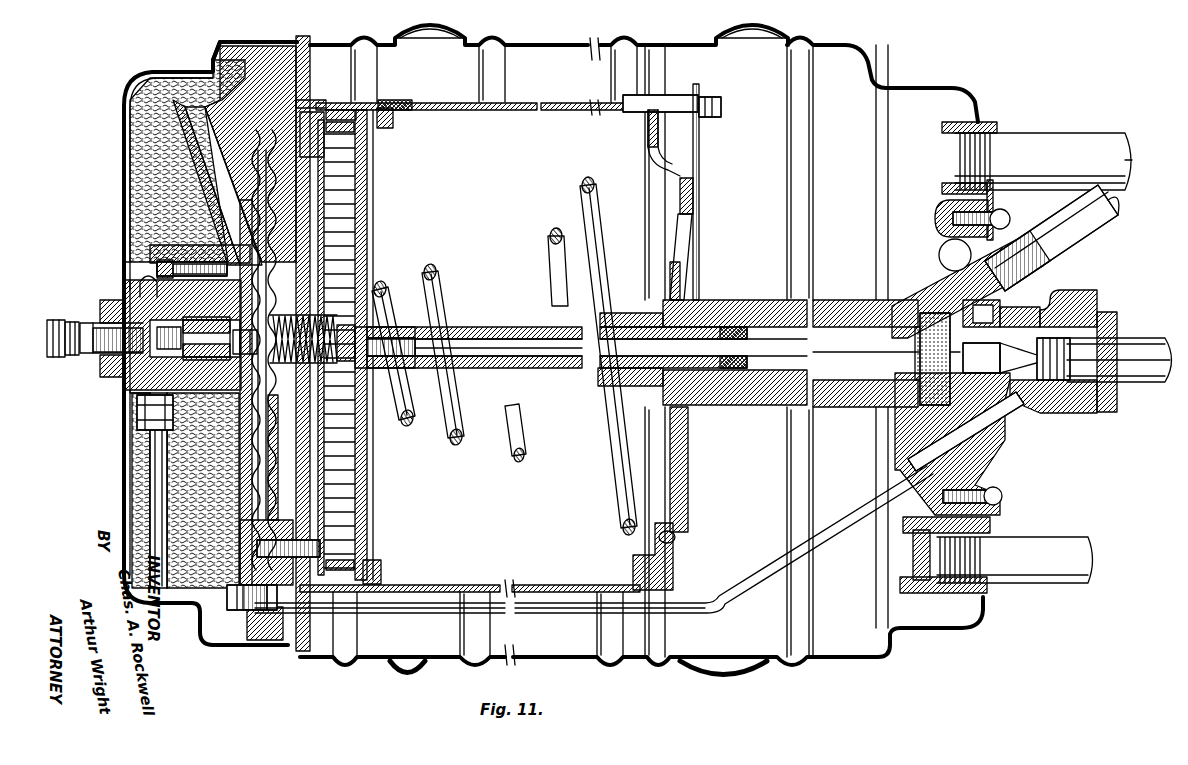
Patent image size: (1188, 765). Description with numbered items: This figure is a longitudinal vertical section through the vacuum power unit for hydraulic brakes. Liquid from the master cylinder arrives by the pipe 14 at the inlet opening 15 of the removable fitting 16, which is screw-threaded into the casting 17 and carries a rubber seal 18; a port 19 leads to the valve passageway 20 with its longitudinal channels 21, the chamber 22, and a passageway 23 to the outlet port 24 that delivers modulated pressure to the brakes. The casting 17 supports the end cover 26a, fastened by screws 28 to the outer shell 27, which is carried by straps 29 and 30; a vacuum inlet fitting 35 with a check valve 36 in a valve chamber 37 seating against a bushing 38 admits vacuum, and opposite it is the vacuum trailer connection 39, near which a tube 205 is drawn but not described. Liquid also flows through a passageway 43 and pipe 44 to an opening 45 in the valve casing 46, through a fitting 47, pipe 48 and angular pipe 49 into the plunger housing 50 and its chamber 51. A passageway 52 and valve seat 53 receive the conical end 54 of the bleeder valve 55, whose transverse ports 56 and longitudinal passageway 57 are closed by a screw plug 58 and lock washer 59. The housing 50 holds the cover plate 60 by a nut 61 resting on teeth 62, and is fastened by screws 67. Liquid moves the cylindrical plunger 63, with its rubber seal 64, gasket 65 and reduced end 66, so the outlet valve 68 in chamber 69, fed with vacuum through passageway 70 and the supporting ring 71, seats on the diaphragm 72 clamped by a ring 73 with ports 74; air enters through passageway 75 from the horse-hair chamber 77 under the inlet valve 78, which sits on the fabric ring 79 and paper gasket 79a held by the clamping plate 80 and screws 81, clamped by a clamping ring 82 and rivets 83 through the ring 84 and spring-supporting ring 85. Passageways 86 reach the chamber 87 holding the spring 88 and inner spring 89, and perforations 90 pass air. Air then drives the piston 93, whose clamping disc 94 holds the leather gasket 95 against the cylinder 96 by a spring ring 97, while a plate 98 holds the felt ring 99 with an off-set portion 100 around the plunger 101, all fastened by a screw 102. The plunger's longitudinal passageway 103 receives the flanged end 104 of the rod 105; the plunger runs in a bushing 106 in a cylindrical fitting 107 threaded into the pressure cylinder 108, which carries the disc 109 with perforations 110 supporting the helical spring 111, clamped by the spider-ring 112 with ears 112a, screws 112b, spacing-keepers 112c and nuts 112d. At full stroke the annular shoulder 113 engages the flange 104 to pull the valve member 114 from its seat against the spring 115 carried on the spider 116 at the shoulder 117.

The pipe 14 is at (1140, 383).
The inlet opening 15 is at (1102, 312).
The removable fitting 16 is at (1108, 413).
The casting 17 is at (940, 300).
The rubber seal 18 is at (1070, 300).
The port 19 is at (1053, 359).
The valve passageway 20 is at (1030, 405).
The longitudinal channels 21 is at (1020, 317).
The chamber 22 is at (965, 380).
The passageway 23 is at (981, 313).
The outlet port 24 is at (1030, 250).
The end cover 26a is at (960, 88).
The outer shell 27 is at (600, 44).
The screws 28 is at (1009, 219).
The strap 29 is at (754, 24).
The strap 30 is at (432, 24).
The vacuum inlet fitting 35 is at (980, 600).
The check valve 36 is at (925, 560).
The valve chamber 37 is at (925, 593).
The bushing 38 is at (912, 548).
The vacuum trailer connection 39 is at (985, 124).
The passageway 43 is at (985, 445).
The pipe 44 is at (846, 520).
The opening 45 is at (268, 640).
The valve casing 46 is at (187, 324).
The fitting 47 is at (252, 642).
The pipe 48 is at (190, 455).
The angular pipe 49 is at (140, 425).
The plunger housing 50 is at (150, 420).
The chamber 51 is at (124, 262).
The passageway 52 is at (130, 288).
The valve seat 53 is at (130, 390).
The conical end 54 is at (136, 385).
The bleeder valve 55 is at (82, 322).
The transverse ports 56 is at (104, 366).
The longitudinal passageway 57 is at (104, 300).
The screw plug 58 is at (54, 358).
The lock washer 59 is at (72, 356).
The cover plate 60 is at (124, 184).
The nut 61 is at (140, 285).
The teeth 62 is at (240, 42).
The cylindrical plunger 63 is at (206, 338).
The rubber seal 64 is at (175, 356).
The gasket 65 is at (206, 327).
The reduced end 66 is at (234, 358).
The screws 67 is at (165, 260).
The outlet valve 68 is at (257, 225).
The chamber 69 is at (240, 470).
The passageway 70 is at (178, 112).
The supporting ring 71 is at (306, 36).
The diaphragm 72 is at (268, 480).
The ring 73 is at (268, 185).
The ports 74 is at (238, 200).
The passageway 75 is at (245, 533).
The chamber 77 is at (178, 517).
The inlet valve 78 is at (340, 205).
The fabric ring 79 is at (340, 176).
The paper gasket 79a is at (345, 162).
The clamping plate 80 is at (340, 148).
The screws 81 is at (356, 130).
The clamping ring 82 is at (280, 470).
The rivets 83 is at (330, 262).
The ring 84 is at (345, 322).
The spring-supporting ring 85 is at (200, 245).
The passageways 86 is at (290, 498).
The chamber 87 is at (340, 456).
The spring 88 is at (394, 350).
The inner spring 89 is at (405, 318).
The perforations 90 is at (345, 246).
The piston 93 is at (368, 180).
The clamping disc 94 is at (370, 108).
The leather gasket 95 is at (334, 100).
The cylinder 96 is at (448, 103).
The spring ring 97 is at (318, 100).
The plate 98 is at (395, 116).
The felt ring 99 is at (396, 106).
The circular off-set portion 100 is at (421, 409).
The plunger 101 is at (528, 326).
The screw 102 is at (410, 330).
The longitudinal passageway 103 is at (612, 352).
The flanged end 104 is at (740, 366).
The rod 105 is at (862, 352).
The bushing 106 is at (620, 312).
The cylindrical fitting 107 is at (614, 387).
The pressure cylinder 108 is at (710, 300).
The disc 109 is at (680, 165).
The perforations 110 is at (690, 245).
The helical spring 111 is at (512, 458).
The spider-ring 112 is at (694, 205).
The ears 112a is at (700, 90).
The screws 112b is at (720, 112).
The spacing-keepers 112c is at (668, 102).
The nuts 112d is at (720, 100).
The annular shoulder 113 is at (752, 340).
The valve member 114 is at (1001, 358).
The spring 115 is at (915, 372).
The spider 116 is at (910, 312).
The shoulder 117 is at (910, 408).
The tube 205 is at (1072, 140).